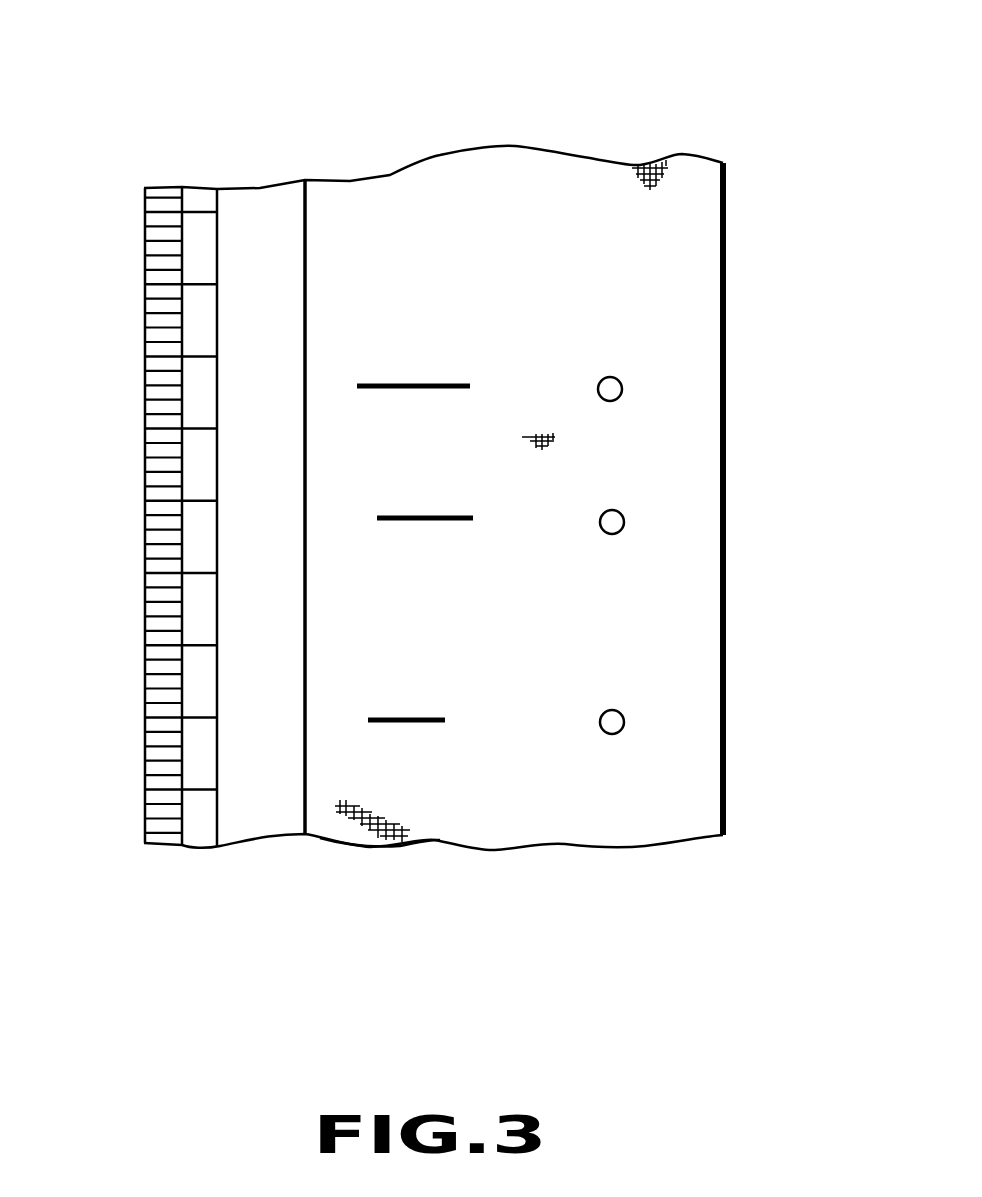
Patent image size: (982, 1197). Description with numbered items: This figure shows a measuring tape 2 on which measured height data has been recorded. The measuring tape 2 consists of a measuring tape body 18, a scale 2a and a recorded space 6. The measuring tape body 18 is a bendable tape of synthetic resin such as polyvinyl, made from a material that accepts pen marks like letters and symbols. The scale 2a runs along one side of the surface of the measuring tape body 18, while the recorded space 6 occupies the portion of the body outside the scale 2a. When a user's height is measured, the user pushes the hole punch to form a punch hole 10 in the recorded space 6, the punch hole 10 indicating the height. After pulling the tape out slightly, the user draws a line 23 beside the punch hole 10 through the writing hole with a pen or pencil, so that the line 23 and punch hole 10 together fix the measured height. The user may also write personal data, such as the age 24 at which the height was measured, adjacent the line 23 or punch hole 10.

The measuring tape 2 is at (345, 172).
The scale 2a is at (154, 480).
The recorded space 6 is at (534, 828).
The punch hole 10 is at (622, 390).
The measuring tape body 18 is at (718, 281).
The line 23 is at (435, 775).
The age 24 is at (427, 365).